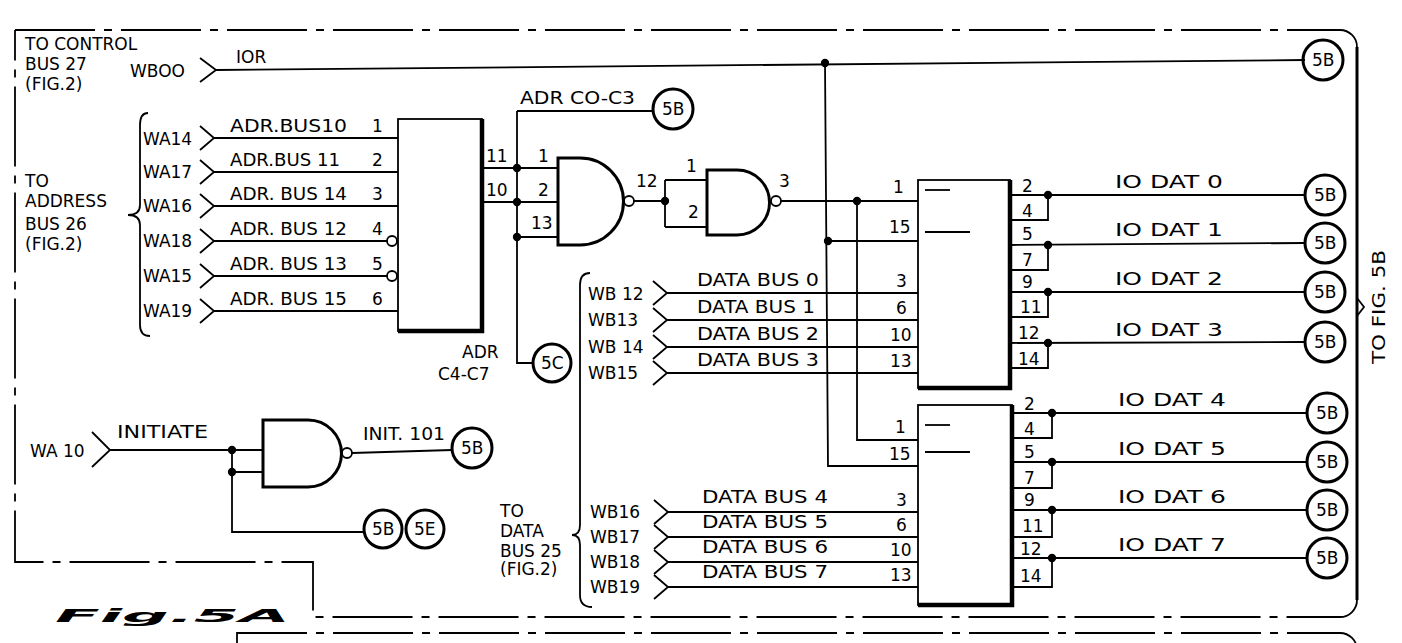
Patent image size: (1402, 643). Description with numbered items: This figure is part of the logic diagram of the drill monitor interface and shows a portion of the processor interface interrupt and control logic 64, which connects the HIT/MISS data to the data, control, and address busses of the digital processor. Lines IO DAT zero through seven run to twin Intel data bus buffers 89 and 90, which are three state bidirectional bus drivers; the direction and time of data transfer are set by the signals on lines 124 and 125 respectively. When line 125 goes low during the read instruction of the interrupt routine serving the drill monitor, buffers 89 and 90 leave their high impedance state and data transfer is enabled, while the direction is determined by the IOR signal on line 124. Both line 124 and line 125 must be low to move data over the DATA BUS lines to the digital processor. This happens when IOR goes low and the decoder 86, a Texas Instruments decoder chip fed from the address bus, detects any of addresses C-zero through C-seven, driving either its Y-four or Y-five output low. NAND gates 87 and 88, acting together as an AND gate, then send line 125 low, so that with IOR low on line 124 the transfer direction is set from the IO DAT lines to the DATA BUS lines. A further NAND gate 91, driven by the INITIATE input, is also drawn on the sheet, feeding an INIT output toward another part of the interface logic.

The processor interface interrupt and control logic 64 is at (140, 562).
The decoder 86 is at (478, 118).
The NAND gate 87 is at (598, 160).
The NAND gate 88 is at (742, 168).
The data bus buffer 89 is at (990, 179).
The data bus buffer 90 is at (916, 410).
The 74LS00 NAND gate (initiate) 91 is at (321, 421).
The IOR line 124 is at (672, 62).
The chip select line 125 is at (808, 205).